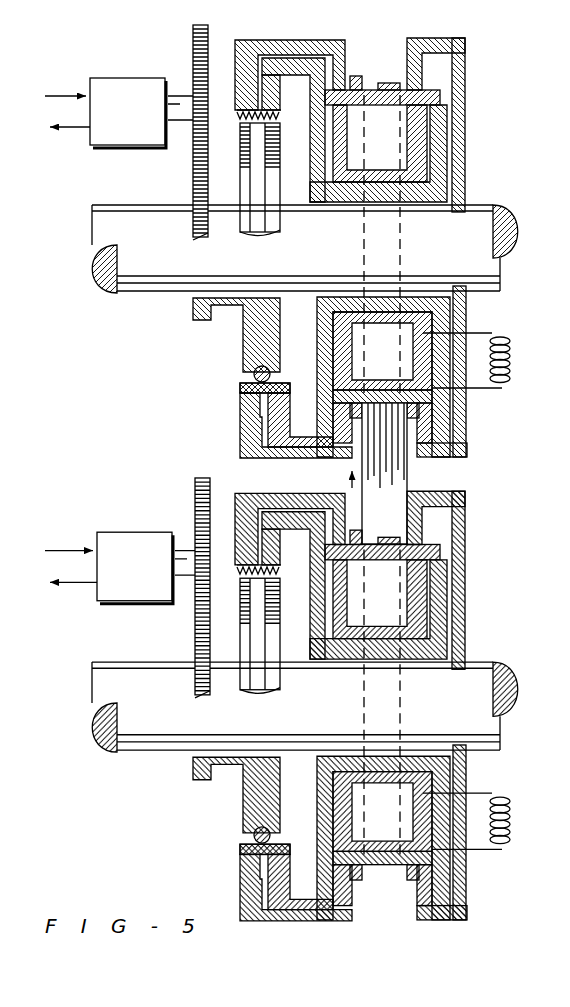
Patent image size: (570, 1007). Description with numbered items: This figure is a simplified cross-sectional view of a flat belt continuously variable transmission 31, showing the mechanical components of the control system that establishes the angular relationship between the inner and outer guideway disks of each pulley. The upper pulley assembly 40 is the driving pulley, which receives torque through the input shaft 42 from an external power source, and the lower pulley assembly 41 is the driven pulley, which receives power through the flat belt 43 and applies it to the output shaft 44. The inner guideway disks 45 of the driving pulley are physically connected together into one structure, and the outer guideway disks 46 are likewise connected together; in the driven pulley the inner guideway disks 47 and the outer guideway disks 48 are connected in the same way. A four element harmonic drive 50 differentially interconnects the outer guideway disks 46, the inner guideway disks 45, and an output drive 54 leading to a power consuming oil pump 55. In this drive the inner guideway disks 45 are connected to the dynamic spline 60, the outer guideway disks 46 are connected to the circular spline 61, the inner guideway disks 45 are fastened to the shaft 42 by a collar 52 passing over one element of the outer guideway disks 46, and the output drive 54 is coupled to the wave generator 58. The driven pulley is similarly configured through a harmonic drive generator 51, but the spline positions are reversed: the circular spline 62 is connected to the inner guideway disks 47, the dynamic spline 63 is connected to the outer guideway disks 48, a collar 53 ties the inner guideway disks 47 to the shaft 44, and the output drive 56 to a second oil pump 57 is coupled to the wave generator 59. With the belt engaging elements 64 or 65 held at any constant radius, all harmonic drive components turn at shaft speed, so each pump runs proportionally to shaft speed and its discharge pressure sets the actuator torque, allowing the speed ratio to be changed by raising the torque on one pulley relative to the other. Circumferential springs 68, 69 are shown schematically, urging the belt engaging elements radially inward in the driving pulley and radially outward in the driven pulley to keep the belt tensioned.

The transmission 31 is at (569, 108).
The pulley assembly 40 is at (550, 293).
The pulley assembly 41 is at (387, 705).
The input shaft 42 is at (484, 182).
The flat belt 43 is at (408, 473).
The output shaft 44 is at (305, 693).
The inner guideway disks 45 is at (407, 67).
The outer guideway disks 46 is at (440, 125).
The inner guideway disks 47 is at (401, 598).
The outer guideway disks 48 is at (387, 585).
The four element harmonic drive 50 is at (232, 342).
The four element harmonic drive generator 51 is at (217, 799).
The collar 52 is at (467, 168).
The collar 53 is at (483, 705).
The output drive 54 is at (170, 163).
The oil pump 55 is at (157, 78).
The output drive 56 is at (167, 588).
The oil pump 57 is at (120, 543).
The wave generator 58 is at (243, 360).
The wave generator 59 is at (273, 863).
The dynamic spline 60 is at (237, 108).
The circular spline 61 is at (287, 93).
The circular spline 62 is at (249, 524).
The dynamic spline 63 is at (287, 558).
The belt engaging elements 64 is at (378, 90).
The belt engaging elements 65 is at (382, 889).
The circumferential spring 68 is at (512, 372).
The circumferential spring 69 is at (489, 816).